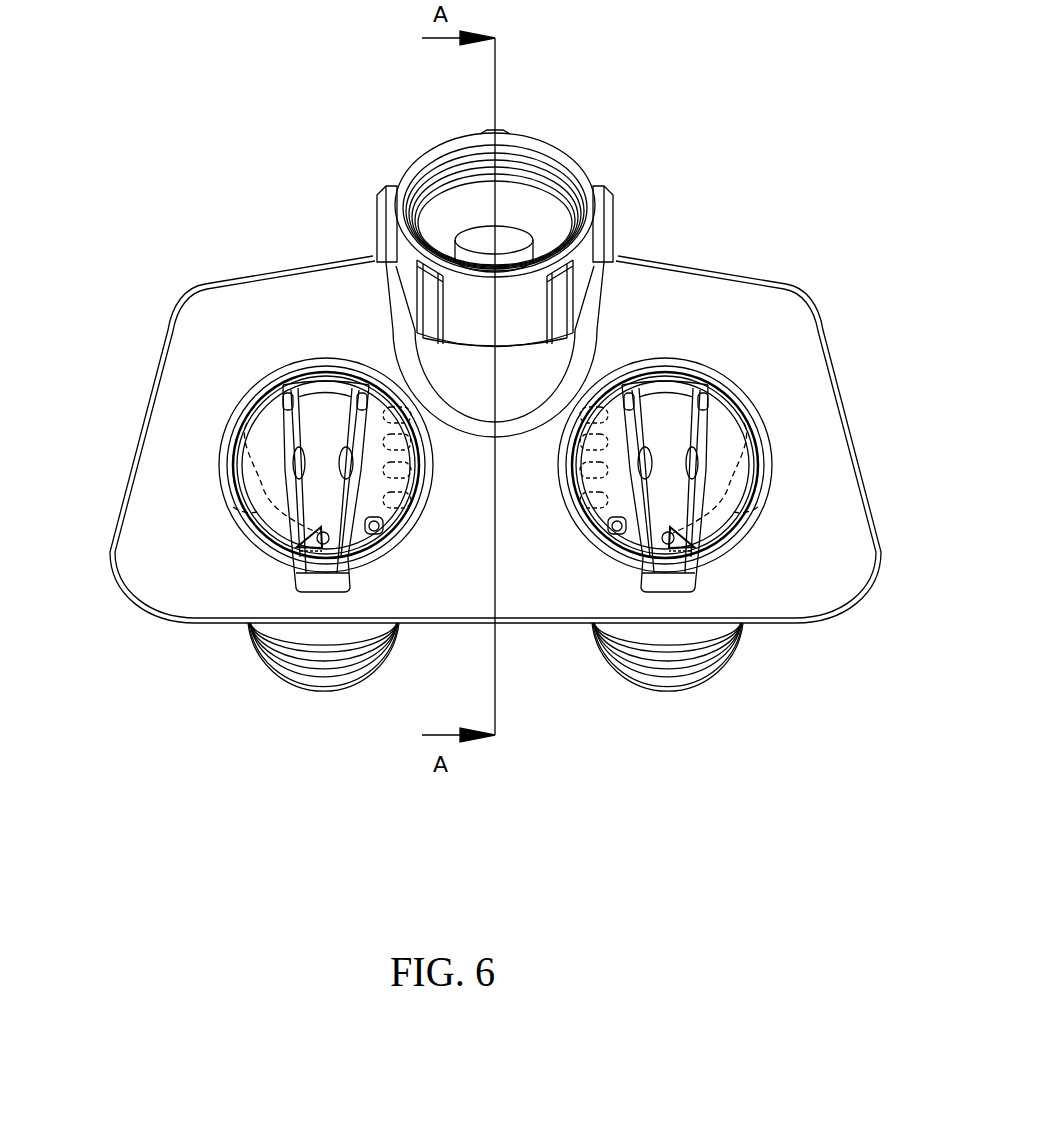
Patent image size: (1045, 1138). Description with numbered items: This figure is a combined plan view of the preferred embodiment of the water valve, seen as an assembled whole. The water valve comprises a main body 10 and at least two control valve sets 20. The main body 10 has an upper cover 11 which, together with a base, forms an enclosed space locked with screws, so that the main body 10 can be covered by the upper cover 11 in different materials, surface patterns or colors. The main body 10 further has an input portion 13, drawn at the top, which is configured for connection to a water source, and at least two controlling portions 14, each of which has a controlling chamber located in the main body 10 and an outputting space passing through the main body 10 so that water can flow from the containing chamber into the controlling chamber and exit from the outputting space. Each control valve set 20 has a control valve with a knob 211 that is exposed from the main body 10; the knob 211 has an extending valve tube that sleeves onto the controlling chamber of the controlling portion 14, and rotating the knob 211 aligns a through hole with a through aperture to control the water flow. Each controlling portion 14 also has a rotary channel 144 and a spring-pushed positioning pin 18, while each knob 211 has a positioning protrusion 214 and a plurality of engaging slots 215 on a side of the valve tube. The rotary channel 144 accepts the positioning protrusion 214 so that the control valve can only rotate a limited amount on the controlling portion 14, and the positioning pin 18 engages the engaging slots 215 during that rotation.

The main body 10 is at (116, 598).
The upper cover 11 is at (843, 590).
The input portion 13 is at (541, 185).
The controlling portion 14 is at (495, 486).
The positioning pin 18 is at (413, 517).
The control valve set 20 is at (281, 362).
The rotary channel 144 is at (250, 512).
The knob 211 is at (280, 421).
The positioning protrusion 214 is at (290, 553).
The engaging slot 215 is at (396, 537).